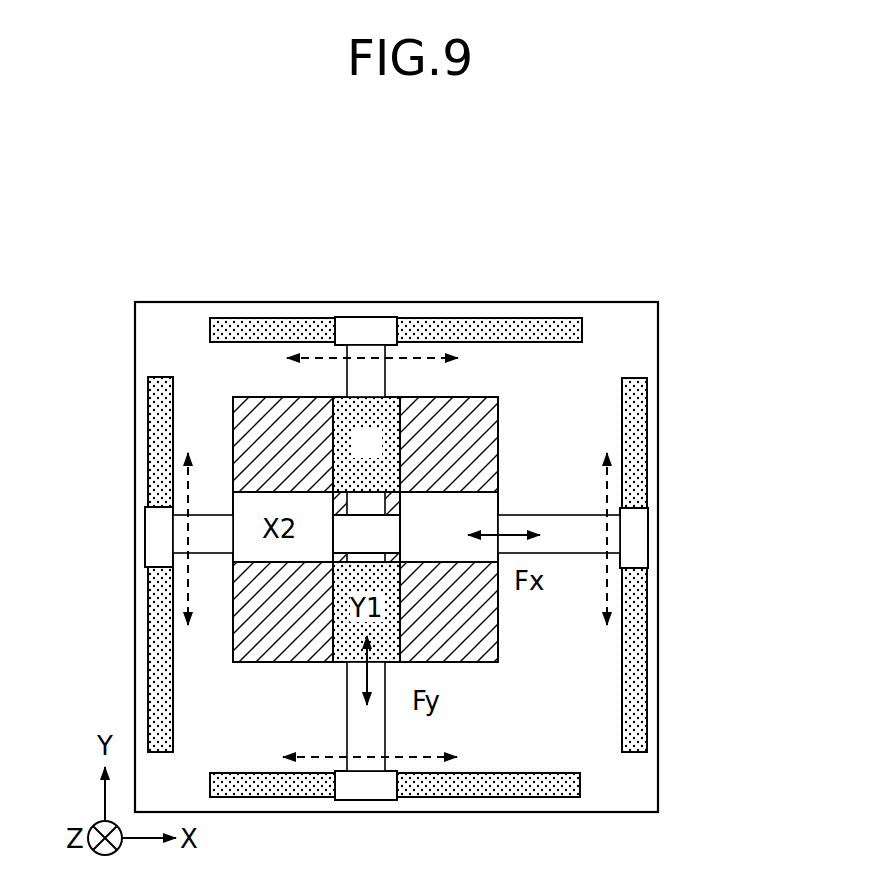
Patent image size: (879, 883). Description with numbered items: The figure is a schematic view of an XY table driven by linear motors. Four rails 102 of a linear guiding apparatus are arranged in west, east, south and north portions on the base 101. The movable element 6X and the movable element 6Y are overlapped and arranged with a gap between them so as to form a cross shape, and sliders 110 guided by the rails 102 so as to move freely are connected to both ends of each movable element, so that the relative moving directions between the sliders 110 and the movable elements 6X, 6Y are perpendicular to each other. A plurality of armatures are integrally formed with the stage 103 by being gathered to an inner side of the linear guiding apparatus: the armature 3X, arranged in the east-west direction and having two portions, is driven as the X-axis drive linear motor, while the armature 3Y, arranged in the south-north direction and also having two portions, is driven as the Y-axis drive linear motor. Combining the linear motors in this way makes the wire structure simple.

The base 101 is at (635, 348).
The rail of linear guiding apparatus 102 is at (500, 330).
The stage 103 is at (487, 437).
The slider 110 is at (635, 533).
The movable element of X-axis 6X is at (561, 540).
The movable element of Y-axis 6Y is at (372, 373).
The armature of X-axis drive linear motor 3X is at (458, 553).
The armature of Y-axis drive linear motor 3Y is at (345, 408).